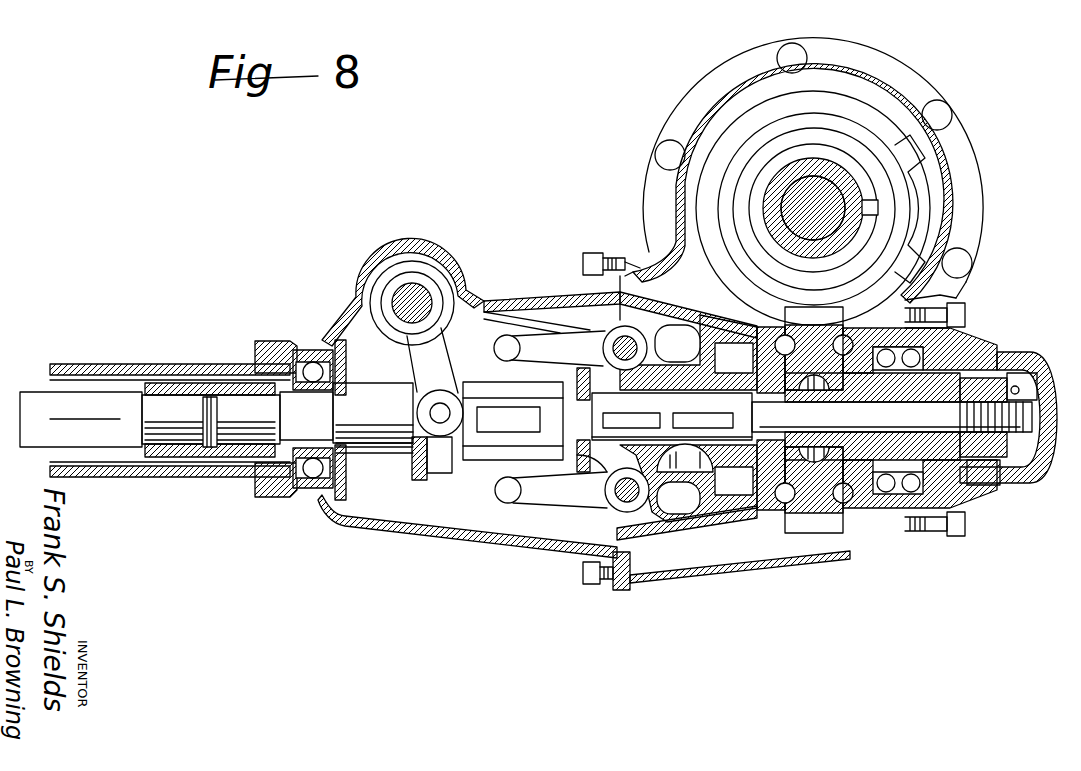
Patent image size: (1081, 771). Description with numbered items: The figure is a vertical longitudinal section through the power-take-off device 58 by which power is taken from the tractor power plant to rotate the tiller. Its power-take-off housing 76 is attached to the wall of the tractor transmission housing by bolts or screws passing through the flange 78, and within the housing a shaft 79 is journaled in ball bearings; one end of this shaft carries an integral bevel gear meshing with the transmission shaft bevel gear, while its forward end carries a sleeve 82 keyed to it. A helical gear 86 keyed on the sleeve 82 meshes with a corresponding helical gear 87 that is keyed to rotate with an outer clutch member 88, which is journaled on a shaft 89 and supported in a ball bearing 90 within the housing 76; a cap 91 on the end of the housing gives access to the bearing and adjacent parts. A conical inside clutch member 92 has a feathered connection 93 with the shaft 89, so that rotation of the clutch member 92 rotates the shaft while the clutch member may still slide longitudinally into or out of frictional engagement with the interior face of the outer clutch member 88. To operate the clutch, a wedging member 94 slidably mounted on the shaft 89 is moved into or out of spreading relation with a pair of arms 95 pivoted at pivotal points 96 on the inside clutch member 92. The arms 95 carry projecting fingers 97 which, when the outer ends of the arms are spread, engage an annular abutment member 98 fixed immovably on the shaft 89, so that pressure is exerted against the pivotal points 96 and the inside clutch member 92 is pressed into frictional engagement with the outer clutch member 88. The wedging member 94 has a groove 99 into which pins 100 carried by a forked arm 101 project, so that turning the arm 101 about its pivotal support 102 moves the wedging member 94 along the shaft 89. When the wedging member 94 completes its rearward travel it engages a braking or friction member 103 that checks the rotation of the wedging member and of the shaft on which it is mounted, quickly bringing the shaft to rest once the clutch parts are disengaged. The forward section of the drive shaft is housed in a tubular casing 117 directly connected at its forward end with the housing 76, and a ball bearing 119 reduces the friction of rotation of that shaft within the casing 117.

The power-take-off device 58 is at (546, 565).
The power-take-off housing 76 is at (720, 582).
The flange 78 is at (688, 109).
The shaft 79 is at (842, 188).
The sleeve 82 is at (866, 222).
The helical gear 86 is at (928, 208).
The helical gear 87 is at (830, 533).
The clutch member 88 is at (740, 302).
The shaft 89 is at (365, 447).
The ball bearing 90 is at (895, 533).
The cap 91 is at (1028, 362).
The conical inside clutch member 92 is at (696, 512).
The feathered connection 93 is at (642, 403).
The wedging member 94 is at (470, 480).
The arms 95 is at (540, 312).
The pivotal points 96 is at (622, 342).
The projecting fingers 97 is at (600, 478).
The annular abutment member 98 is at (585, 376).
The groove 99 is at (430, 474).
The pins 100 is at (441, 405).
The forked arm 101 is at (472, 288).
The pivotal support 102 is at (400, 285).
The braking or friction member 103 is at (320, 342).
The tubular casing 117 is at (104, 364).
The ball bearing 119 is at (318, 498).